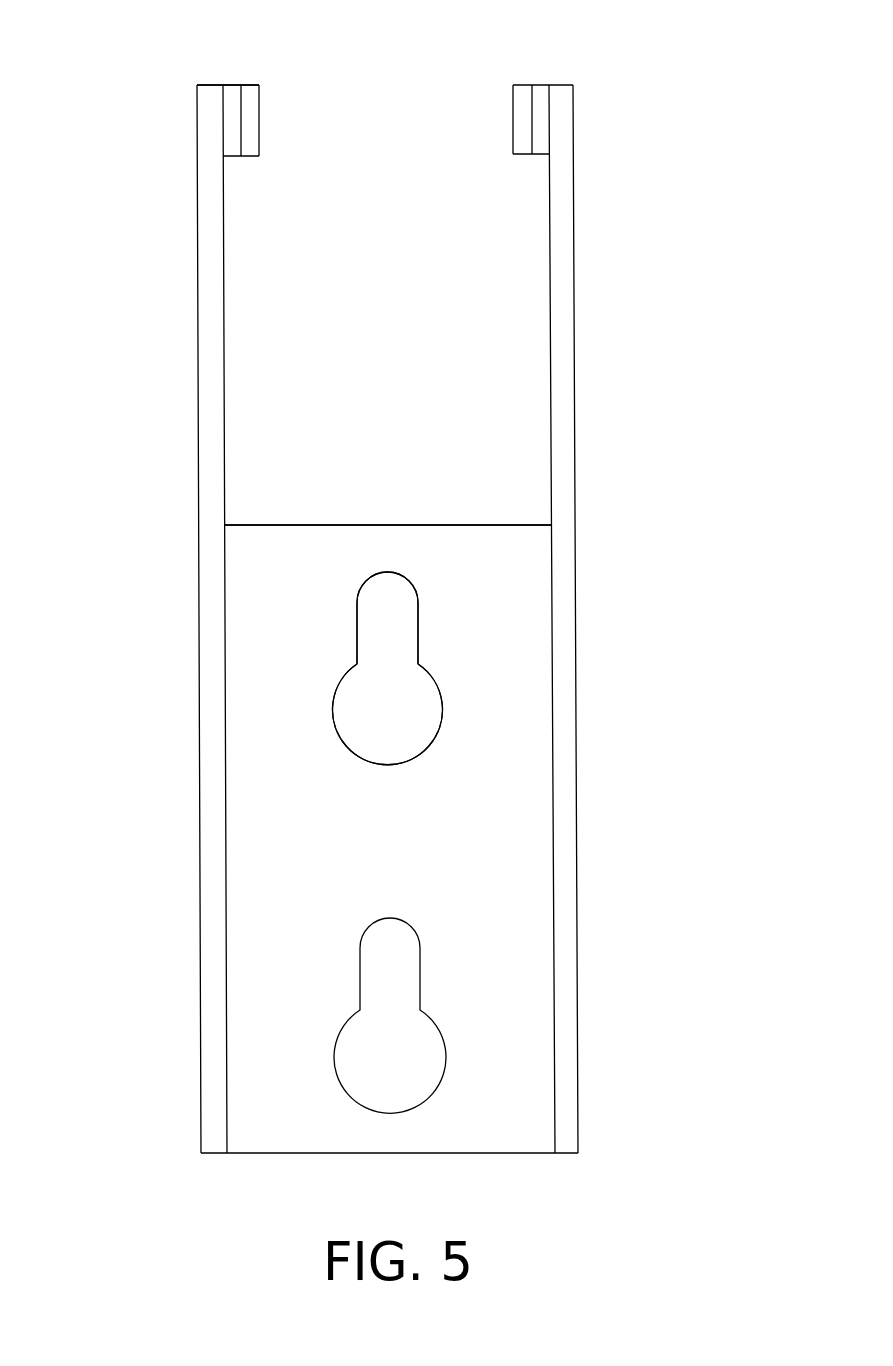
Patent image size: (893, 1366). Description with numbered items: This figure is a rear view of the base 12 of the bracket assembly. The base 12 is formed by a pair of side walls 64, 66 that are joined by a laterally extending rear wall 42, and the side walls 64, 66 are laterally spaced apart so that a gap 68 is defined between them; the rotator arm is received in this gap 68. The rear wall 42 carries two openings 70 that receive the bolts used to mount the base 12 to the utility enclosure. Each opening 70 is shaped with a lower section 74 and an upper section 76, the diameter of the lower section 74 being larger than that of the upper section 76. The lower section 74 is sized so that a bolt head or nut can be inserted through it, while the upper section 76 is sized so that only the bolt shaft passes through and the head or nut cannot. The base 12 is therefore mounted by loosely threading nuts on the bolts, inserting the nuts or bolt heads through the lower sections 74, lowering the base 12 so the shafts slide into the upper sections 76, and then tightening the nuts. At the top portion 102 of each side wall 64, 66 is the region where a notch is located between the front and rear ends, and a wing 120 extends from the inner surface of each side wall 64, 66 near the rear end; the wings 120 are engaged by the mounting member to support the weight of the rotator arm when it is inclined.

The base 12 is at (152, 719).
The rear wall 42 is at (408, 863).
The side wall 64 is at (565, 472).
The side wall 66 is at (197, 455).
The gap 68 is at (407, 323).
The opening 70 is at (412, 675).
The lower section 74 is at (376, 724).
The upper section 76 is at (368, 619).
The top portion 102 is at (197, 85).
The wing 120 is at (259, 118).